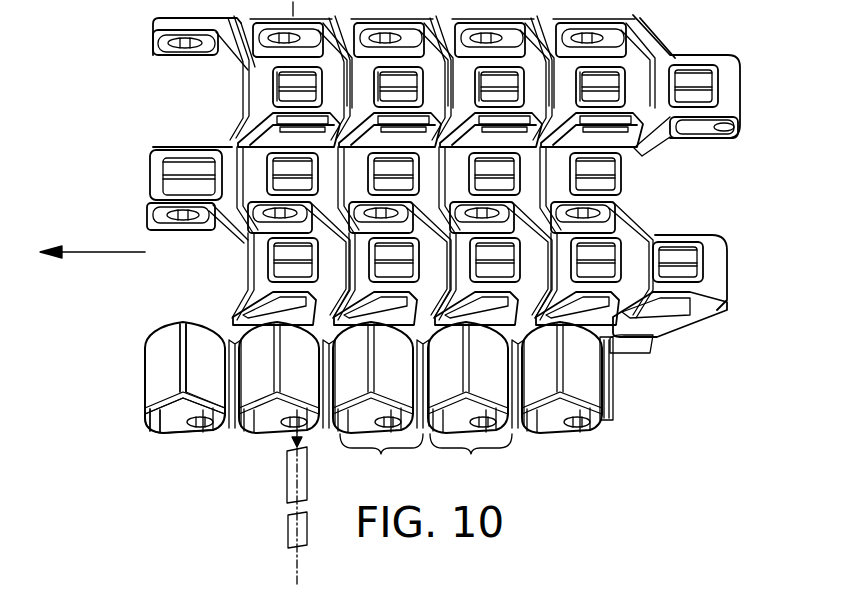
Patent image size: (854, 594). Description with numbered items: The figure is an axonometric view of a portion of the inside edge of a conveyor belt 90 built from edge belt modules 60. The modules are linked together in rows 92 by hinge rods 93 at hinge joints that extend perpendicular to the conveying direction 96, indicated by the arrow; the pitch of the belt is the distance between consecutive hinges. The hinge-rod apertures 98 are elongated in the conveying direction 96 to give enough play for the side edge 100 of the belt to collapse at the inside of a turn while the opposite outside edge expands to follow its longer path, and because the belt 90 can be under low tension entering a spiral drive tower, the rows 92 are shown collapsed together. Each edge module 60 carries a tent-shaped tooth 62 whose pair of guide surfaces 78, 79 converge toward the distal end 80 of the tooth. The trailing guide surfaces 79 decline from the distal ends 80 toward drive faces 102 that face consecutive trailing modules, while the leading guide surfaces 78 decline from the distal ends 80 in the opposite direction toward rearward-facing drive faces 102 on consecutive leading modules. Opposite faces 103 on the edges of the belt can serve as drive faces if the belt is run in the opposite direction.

The conveyor belt 90 is at (678, 51).
The conveying direction 96 is at (110, 250).
The hinge-rod apertures 98 is at (185, 223).
The distal end 80 is at (185, 323).
The trailing guide surface 79 is at (196, 347).
The leading guide surface 78 is at (158, 373).
The opposite faces 103 is at (148, 406).
The tent-shaped tooth 62 is at (180, 408).
The drive faces 102 is at (233, 400).
The rows 92 is at (426, 454).
The hinge rods 93 is at (287, 481).
The side edge 100 is at (560, 425).
The edge belt module 60 is at (640, 354).